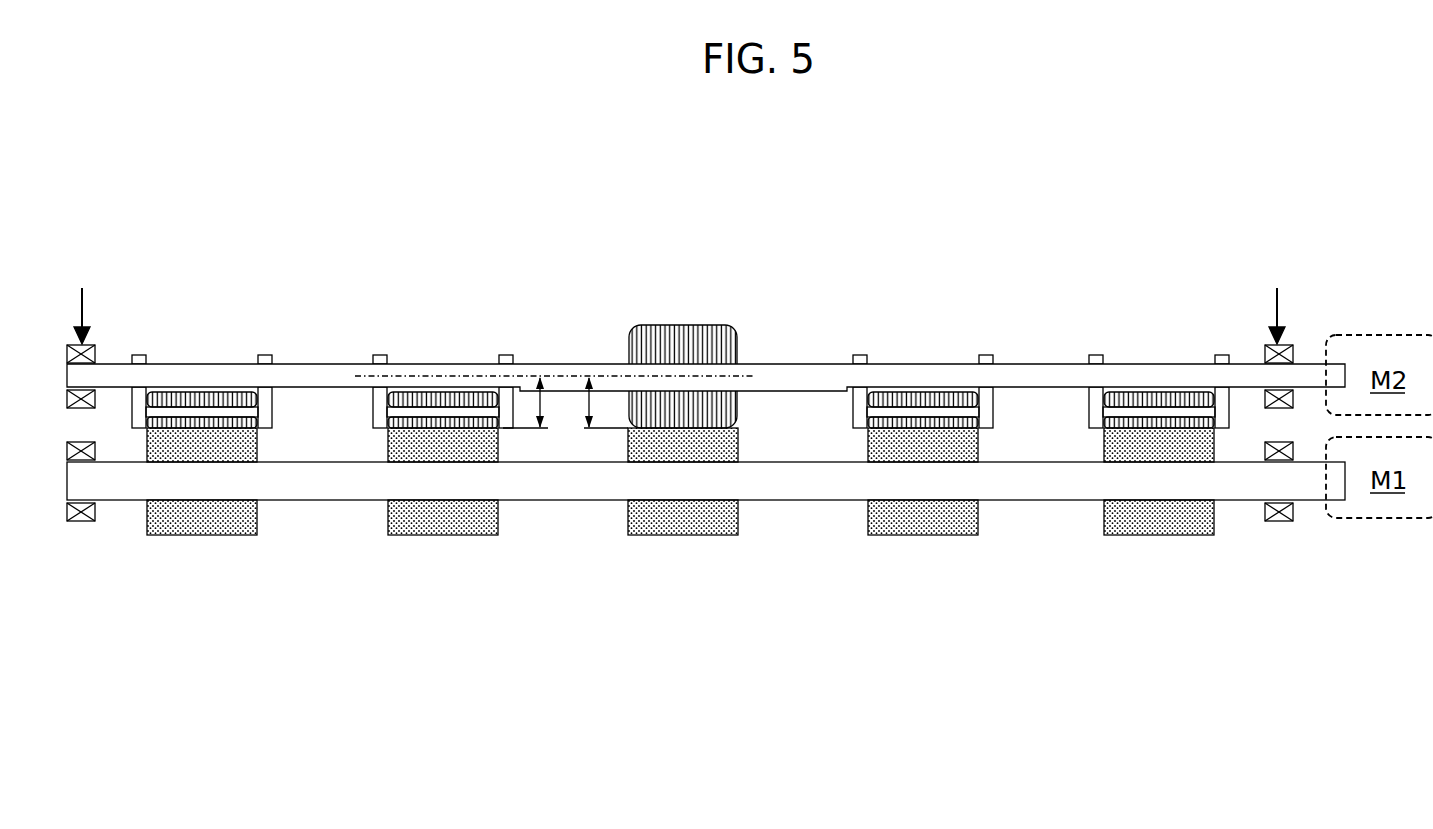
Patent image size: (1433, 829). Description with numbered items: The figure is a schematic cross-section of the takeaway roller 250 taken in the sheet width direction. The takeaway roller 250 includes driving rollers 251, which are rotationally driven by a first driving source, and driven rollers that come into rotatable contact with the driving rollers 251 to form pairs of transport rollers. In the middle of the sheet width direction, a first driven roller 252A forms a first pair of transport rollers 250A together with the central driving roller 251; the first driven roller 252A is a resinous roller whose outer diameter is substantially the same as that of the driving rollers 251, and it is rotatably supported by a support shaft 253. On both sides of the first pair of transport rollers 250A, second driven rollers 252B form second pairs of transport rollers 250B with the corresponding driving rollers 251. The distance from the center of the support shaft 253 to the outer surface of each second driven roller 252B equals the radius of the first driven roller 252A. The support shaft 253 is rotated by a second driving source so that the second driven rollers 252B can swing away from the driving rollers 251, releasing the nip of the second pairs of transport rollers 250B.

The takeaway roller 250 is at (232, 222).
The first pair of transport rollers 250A is at (690, 330).
The second pair of transport rollers 250B is at (203, 338).
The driving roller 251 is at (215, 518).
The first driven roller 252A is at (685, 345).
The second driven roller 252B is at (217, 398).
The support shaft 253 is at (763, 382).